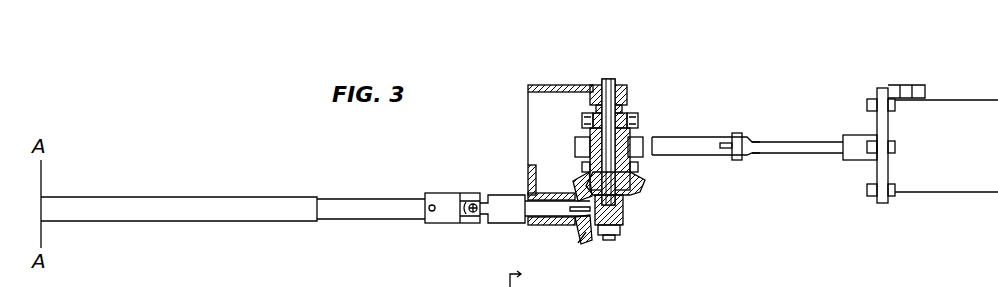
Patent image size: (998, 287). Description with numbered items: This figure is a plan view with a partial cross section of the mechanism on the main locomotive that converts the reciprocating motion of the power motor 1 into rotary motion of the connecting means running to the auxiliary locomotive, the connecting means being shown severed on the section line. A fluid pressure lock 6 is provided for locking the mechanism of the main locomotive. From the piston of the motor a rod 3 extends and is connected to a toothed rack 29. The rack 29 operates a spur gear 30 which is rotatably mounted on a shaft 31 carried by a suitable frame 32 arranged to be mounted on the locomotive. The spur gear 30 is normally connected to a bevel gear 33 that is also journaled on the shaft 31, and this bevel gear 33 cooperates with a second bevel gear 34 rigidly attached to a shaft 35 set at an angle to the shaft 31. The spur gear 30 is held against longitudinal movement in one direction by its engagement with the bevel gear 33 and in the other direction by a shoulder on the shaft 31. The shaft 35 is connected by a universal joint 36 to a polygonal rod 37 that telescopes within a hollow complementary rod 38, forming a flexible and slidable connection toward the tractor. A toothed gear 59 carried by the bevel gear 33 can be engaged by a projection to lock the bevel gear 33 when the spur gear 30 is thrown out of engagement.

The power motor 1 is at (981, 107).
The rod 3 is at (818, 143).
The fluid pressure lock 6 is at (512, 268).
The toothed rack 29 is at (706, 143).
The spur gear 30 is at (641, 137).
The shaft 31 is at (609, 86).
The frame 32 is at (555, 77).
The bevel gear 33 is at (639, 184).
The second bevel gear 34 is at (583, 238).
The shaft 35 is at (547, 207).
The universal joint 36 is at (466, 183).
The polygonal rod 37 is at (361, 207).
The hollow complementary rod 38 is at (248, 201).
The toothed gear 59 is at (640, 167).